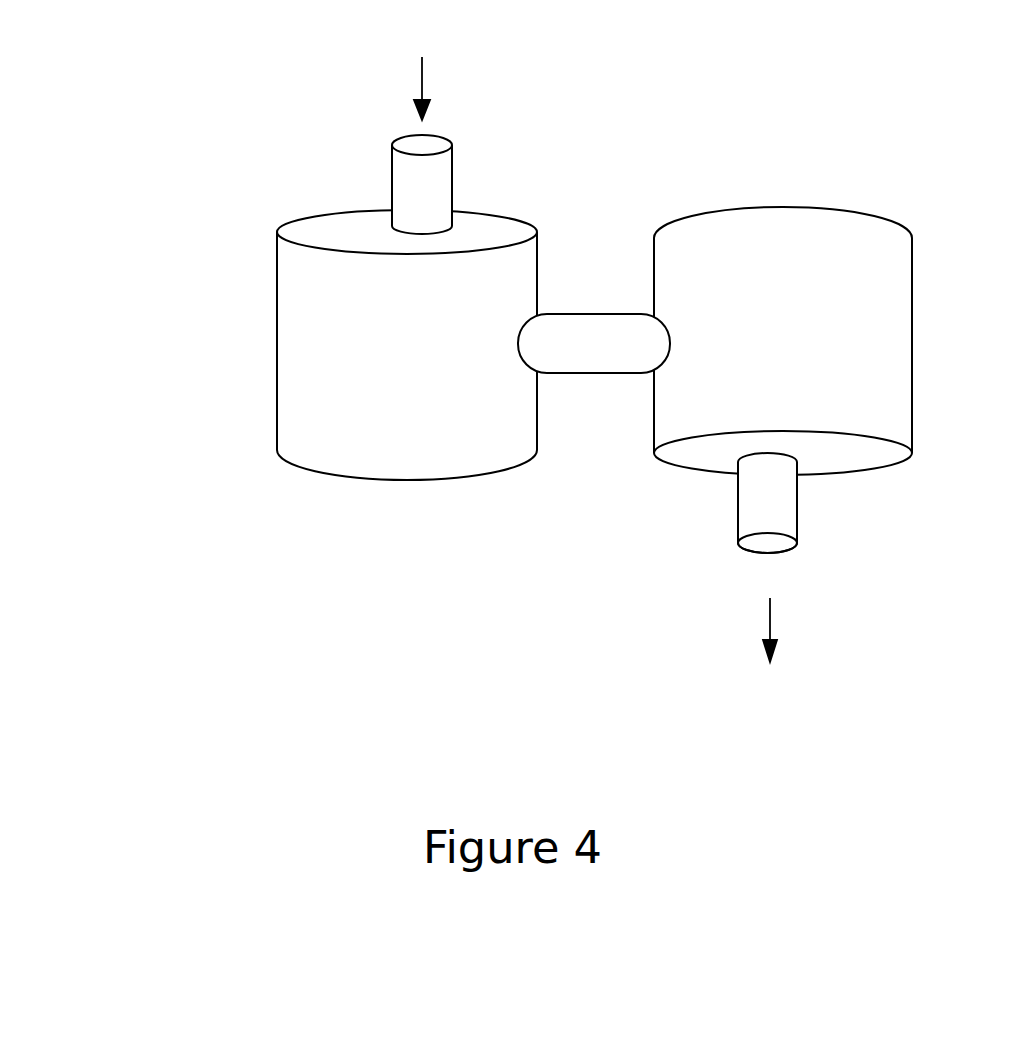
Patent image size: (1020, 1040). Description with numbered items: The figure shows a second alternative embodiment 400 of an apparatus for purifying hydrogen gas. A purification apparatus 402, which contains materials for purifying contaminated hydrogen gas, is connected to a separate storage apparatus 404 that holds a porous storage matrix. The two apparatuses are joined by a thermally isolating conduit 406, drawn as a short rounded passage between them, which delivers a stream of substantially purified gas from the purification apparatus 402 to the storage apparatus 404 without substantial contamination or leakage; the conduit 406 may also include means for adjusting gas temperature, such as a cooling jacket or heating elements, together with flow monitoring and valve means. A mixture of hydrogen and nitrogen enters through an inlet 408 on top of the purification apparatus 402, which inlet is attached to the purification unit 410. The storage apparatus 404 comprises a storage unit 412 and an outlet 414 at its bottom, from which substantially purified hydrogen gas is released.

The second alternative embodiment 400 is at (192, 100).
The purification apparatus 402 is at (360, 384).
The storage apparatus 404 is at (725, 382).
The thermally isolating conduit 406 is at (572, 313).
The inlet 408 is at (452, 168).
The purification unit 410 is at (277, 392).
The storage unit 412 is at (654, 423).
The outlet 414 is at (797, 517).